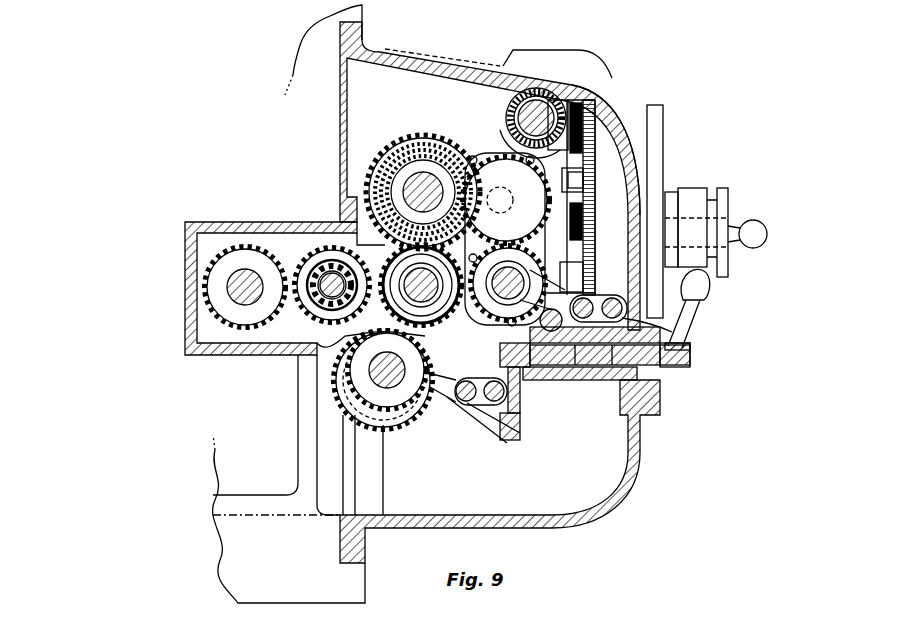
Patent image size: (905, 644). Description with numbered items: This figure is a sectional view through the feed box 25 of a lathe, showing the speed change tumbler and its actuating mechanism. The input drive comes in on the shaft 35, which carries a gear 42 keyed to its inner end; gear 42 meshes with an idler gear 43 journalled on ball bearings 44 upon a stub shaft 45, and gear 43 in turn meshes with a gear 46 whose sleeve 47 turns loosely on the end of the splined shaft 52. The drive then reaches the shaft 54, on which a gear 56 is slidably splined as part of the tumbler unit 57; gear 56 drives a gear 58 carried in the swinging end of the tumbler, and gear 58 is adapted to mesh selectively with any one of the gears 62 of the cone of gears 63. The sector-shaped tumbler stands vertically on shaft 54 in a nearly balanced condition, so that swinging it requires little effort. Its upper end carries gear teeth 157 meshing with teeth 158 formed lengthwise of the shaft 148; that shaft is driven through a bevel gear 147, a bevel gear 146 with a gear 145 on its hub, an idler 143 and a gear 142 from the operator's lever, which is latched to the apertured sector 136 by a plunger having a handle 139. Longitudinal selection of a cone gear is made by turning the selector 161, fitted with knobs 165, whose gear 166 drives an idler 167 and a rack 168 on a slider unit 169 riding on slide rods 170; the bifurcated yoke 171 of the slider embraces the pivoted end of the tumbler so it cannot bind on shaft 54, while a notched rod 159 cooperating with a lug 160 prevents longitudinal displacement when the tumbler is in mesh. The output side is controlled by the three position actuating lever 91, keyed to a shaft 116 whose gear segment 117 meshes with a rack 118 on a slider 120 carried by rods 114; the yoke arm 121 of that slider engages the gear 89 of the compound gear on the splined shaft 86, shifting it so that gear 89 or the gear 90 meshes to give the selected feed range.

The feed box 25 is at (642, 449).
The shaft 35 is at (236, 283).
The gear 42 is at (215, 300).
The idler gear 43 is at (313, 316).
The ball bearings 44 is at (330, 268).
The stub shaft 45 is at (318, 262).
The gear 46 is at (508, 326).
The sleeve 47 is at (398, 306).
The splined shaft 52 is at (482, 330).
The shaft 54 is at (490, 310).
The gear 56 is at (392, 182).
The tumbler unit 57 is at (486, 160).
The gear 58 is at (522, 242).
The gears 62 is at (405, 145).
The cone of gears 63 is at (427, 148).
The splined shaft 86 is at (367, 372).
The gear 89 is at (390, 432).
The gear 90 is at (383, 432).
The actuating lever 91 is at (690, 323).
The rods 114 is at (481, 432).
The shaft 116 is at (576, 368).
The gear segment 117 is at (522, 432).
The rack 118 is at (518, 442).
The slider 120 is at (462, 412).
The yoke arm 121 is at (418, 414).
The sector 136 is at (656, 122).
The handle 139 is at (748, 222).
The gear 142 is at (592, 228).
The idler 143 is at (586, 178).
The gear 145 is at (610, 108).
The bevel gear 146 is at (572, 103).
The bevel gear 147 is at (520, 100).
The shaft 148 is at (554, 100).
The gear teeth 157 is at (508, 112).
The teeth 158 is at (538, 92).
The notched rod 159 is at (558, 370).
The lug 160 is at (552, 380).
The selector 161 is at (725, 258).
The knobs 165 is at (760, 234).
The gear 166 is at (505, 207).
The idler 167 is at (590, 250).
The rack 168 is at (588, 276).
The slider unit 169 is at (688, 339).
The slide rods 170 is at (598, 383).
The bifurcated yoke 171 is at (588, 368).